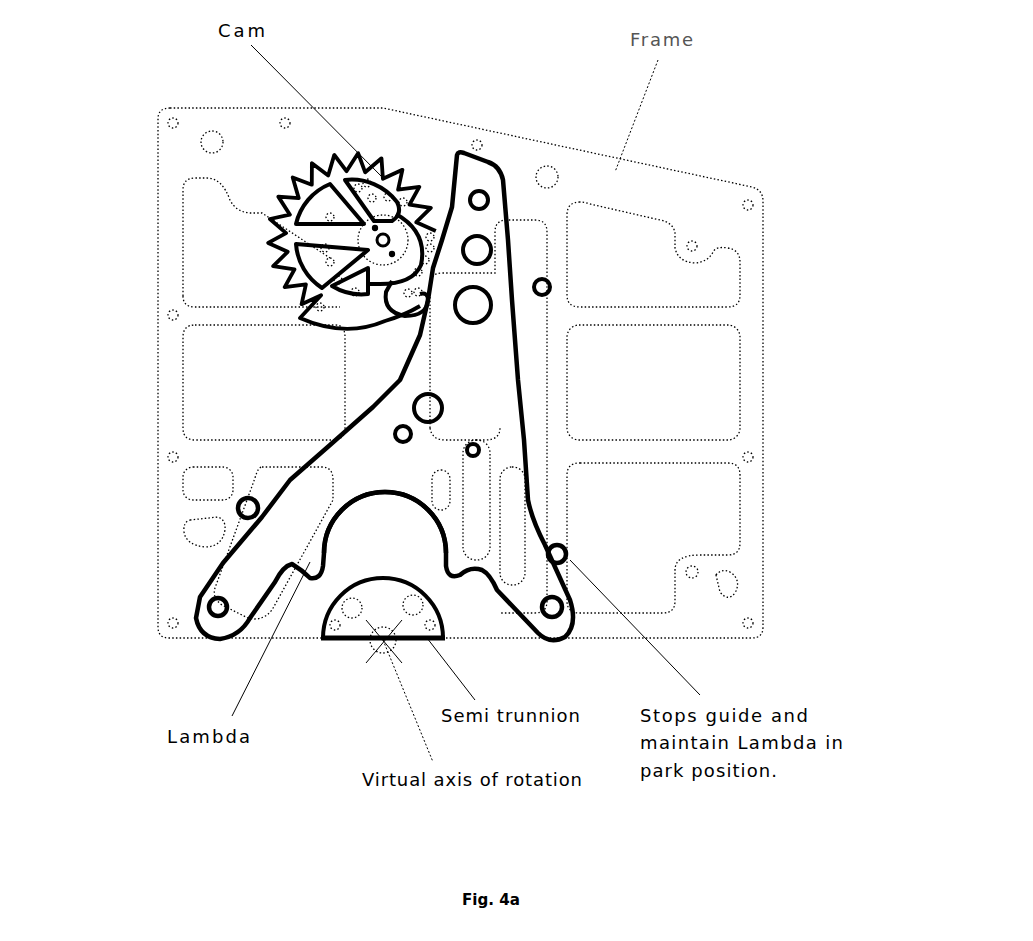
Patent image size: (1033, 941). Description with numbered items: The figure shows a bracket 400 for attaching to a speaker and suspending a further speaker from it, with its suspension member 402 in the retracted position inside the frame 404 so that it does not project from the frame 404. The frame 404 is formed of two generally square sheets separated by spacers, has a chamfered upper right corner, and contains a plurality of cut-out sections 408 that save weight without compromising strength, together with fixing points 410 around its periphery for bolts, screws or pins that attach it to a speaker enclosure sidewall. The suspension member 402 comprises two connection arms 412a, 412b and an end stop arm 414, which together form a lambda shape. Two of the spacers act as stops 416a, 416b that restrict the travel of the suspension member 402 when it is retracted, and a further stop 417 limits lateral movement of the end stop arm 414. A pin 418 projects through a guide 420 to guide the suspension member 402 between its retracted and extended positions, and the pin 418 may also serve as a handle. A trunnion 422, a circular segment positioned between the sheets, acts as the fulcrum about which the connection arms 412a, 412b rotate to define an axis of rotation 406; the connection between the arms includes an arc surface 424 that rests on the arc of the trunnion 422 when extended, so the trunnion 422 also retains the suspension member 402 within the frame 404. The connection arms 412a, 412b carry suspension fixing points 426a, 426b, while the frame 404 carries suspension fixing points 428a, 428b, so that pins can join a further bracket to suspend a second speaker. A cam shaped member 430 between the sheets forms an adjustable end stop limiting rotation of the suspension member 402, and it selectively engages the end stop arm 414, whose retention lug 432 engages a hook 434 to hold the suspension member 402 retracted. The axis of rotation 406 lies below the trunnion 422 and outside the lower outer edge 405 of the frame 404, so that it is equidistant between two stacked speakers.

The bracket 400 is at (722, 160).
The suspension member 402 is at (232, 536).
The frame 404 is at (735, 258).
The outer edge 405 is at (713, 640).
The axis of rotation 406 is at (370, 642).
The cut-out sections 408 is at (202, 250).
The fixing points 410 is at (158, 125).
The connection arm 412a is at (208, 578).
The connection arm 412b is at (500, 527).
The end stop arm 414 is at (338, 396).
The stop 416a is at (233, 497).
The stop 416b is at (560, 541).
The further stop 417 is at (550, 277).
The pin 418 is at (460, 443).
The guide 420 is at (467, 485).
The trunnion 422 is at (410, 629).
The arc surface 424 is at (352, 497).
The suspension fixing point 426a is at (198, 612).
The suspension fixing point 426b is at (543, 620).
The suspension fixing point 428a is at (197, 135).
The suspension fixing point 428b is at (545, 155).
The cam shaped member 430 is at (388, 183).
The retention lug 432 is at (397, 297).
The hook 434 is at (378, 320).